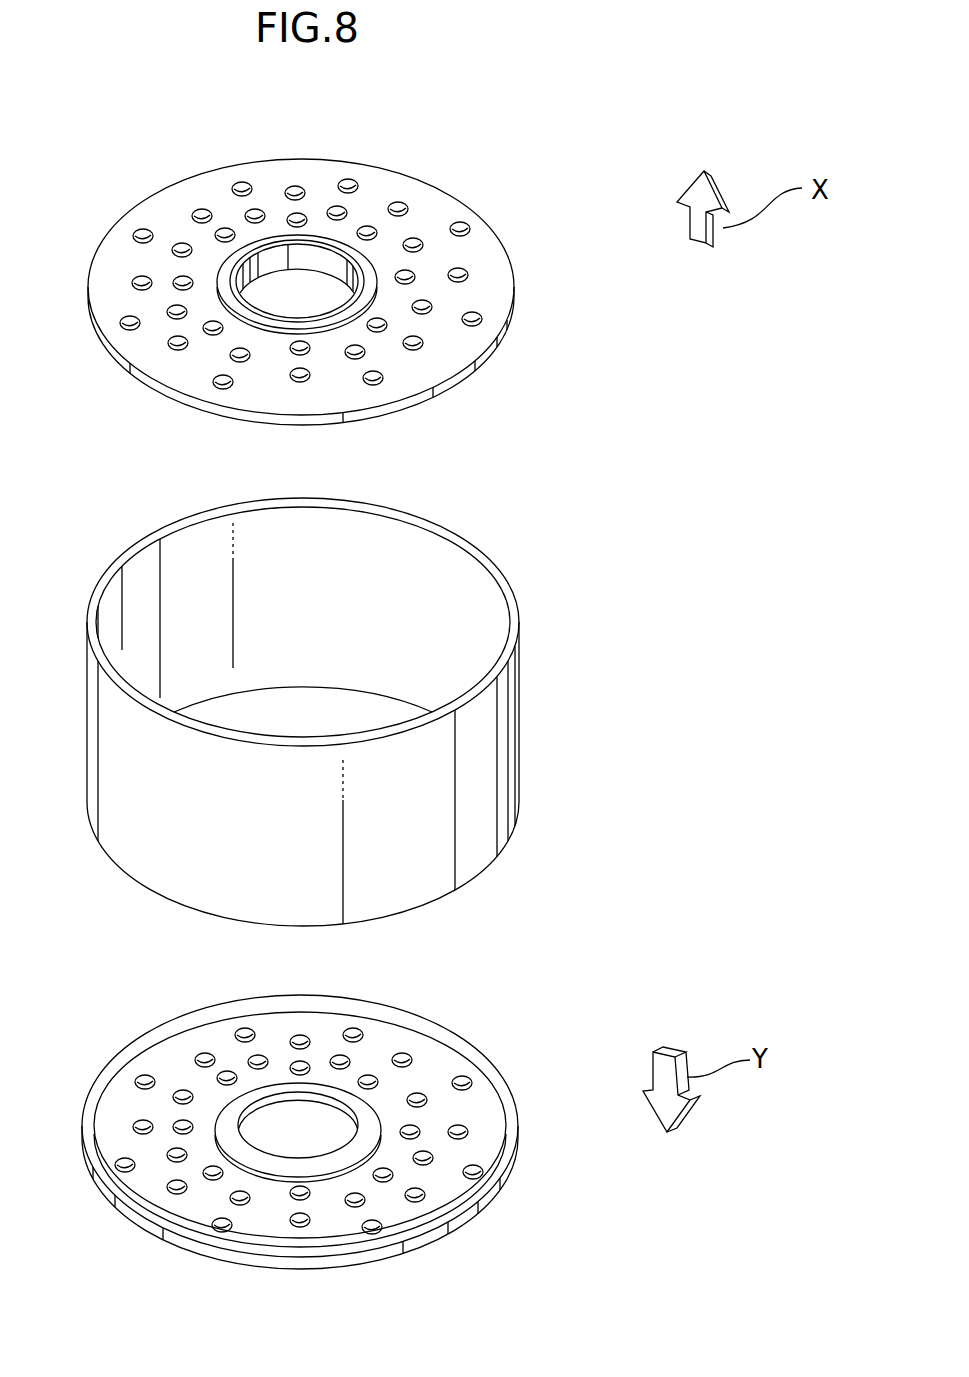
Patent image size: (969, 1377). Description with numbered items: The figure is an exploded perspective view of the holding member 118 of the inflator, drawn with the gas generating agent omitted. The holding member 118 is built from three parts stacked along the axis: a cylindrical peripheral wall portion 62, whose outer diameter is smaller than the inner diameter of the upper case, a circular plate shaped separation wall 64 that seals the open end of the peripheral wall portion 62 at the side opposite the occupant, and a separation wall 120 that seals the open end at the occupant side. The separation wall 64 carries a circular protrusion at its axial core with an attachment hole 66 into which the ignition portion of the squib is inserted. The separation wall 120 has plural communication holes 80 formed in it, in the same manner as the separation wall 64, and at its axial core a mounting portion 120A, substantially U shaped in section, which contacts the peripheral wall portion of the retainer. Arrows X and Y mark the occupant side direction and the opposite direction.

The holding member 118 is at (638, 460).
The separation wall 120 is at (360, 311).
The mounting portion 120A is at (360, 267).
The cylindrical peripheral wall portion 62 is at (535, 672).
The separation wall 64 is at (350, 1069).
The attachment hole 66 is at (316, 1137).
The communication holes 80 is at (460, 270).